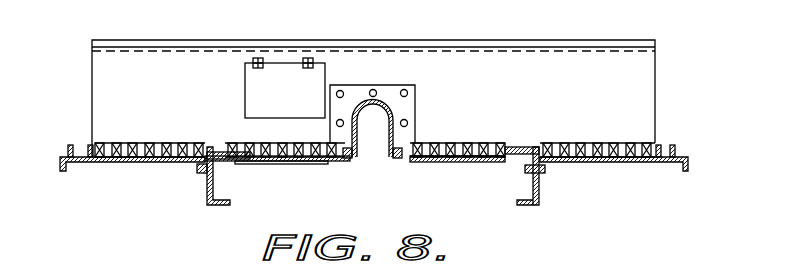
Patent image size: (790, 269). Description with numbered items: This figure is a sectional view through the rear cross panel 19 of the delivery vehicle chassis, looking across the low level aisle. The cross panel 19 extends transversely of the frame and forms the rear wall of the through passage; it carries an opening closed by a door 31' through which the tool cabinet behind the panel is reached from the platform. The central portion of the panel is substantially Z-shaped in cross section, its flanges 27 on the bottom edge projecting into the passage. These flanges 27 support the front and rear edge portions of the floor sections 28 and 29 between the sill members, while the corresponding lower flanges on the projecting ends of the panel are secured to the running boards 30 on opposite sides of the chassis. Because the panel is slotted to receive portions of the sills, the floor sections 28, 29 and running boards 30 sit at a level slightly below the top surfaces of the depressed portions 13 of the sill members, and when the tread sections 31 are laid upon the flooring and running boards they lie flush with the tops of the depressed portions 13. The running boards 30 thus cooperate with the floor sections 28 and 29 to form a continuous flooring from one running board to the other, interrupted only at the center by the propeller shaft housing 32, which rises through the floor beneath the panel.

The cross panel 19 is at (160, 50).
The door 31' is at (335, 64).
The propeller shaft housing 32 is at (395, 114).
The tread sections 31 is at (375, 133).
The running boards 30 is at (610, 160).
The flanges 27 is at (283, 162).
The floor section 29 is at (327, 162).
The floor section 28 is at (460, 151).
The depressed portion 13 is at (218, 182).